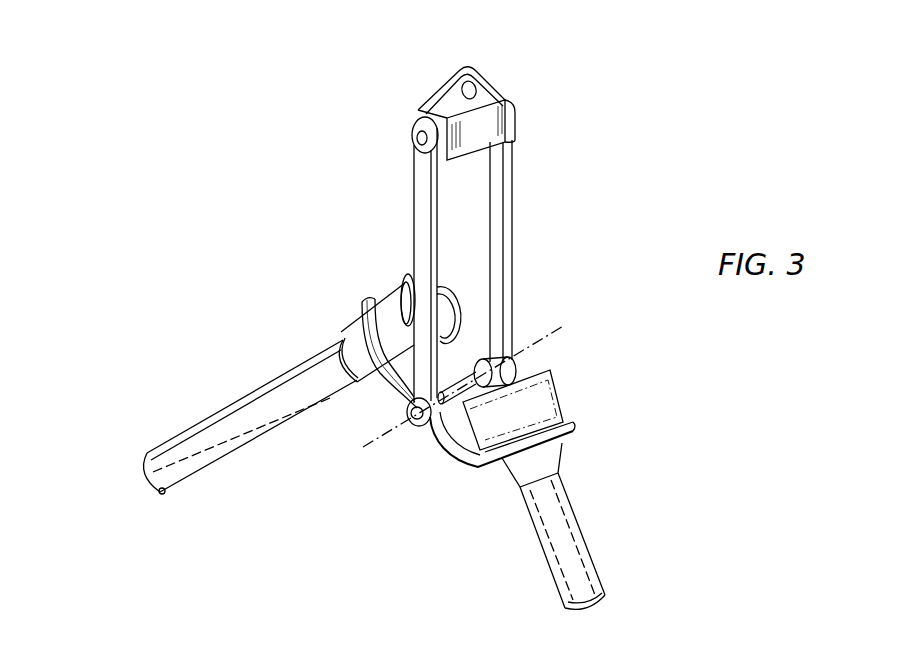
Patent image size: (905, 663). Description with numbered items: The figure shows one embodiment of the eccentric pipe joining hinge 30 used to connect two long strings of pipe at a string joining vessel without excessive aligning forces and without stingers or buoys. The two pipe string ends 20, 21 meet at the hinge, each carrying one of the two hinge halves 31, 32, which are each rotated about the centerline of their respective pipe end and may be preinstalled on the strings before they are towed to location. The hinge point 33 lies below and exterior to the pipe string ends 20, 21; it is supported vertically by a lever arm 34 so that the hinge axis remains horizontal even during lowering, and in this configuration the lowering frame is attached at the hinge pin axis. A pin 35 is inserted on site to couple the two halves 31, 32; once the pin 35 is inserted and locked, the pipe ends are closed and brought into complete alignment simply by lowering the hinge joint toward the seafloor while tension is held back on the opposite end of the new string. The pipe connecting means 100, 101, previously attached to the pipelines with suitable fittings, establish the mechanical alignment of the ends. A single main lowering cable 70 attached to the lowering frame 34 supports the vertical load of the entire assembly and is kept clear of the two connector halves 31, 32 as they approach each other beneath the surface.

The cable 70 is at (468, 70).
The pipe joining hinge 30 is at (628, 253).
The lever arm 34 is at (512, 173).
The pipe string end 20 is at (247, 408).
The hinge half 32 is at (365, 302).
The pipe connecting means 101 is at (443, 317).
The hinge point 33 is at (403, 436).
The pin 35 is at (461, 437).
The pipe connecting means 100 is at (554, 393).
The hinge half 31 is at (573, 425).
The pipe string end 21 is at (577, 525).